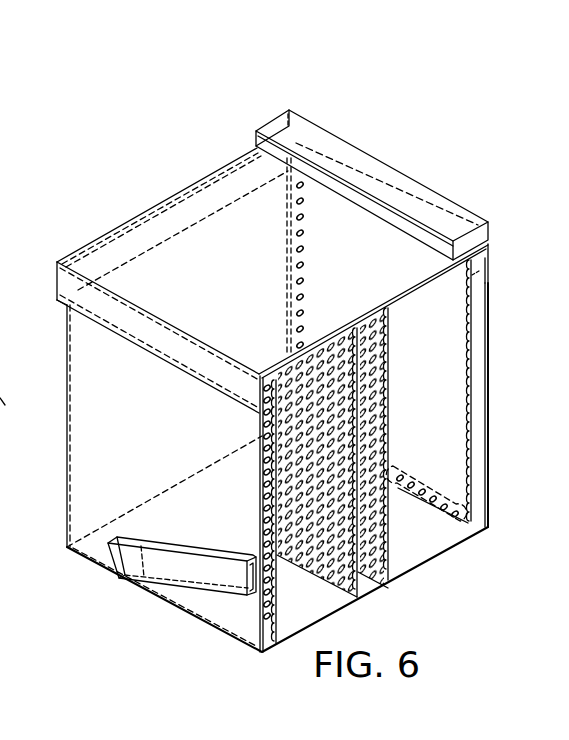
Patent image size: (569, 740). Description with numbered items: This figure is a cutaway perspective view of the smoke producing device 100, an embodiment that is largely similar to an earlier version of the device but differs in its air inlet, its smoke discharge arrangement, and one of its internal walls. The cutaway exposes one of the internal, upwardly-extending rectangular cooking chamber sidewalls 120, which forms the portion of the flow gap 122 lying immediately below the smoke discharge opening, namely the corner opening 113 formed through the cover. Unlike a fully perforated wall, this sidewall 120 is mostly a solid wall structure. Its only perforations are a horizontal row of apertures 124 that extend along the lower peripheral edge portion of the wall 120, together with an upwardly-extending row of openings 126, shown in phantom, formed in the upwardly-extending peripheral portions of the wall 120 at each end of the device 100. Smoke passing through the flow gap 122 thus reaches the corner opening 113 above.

The smoke producing device 100 is at (463, 86).
The corner opening 113 is at (296, 145).
The cooking chamber sidewall 120 is at (471, 396).
The flow gap 122 is at (284, 235).
The apertures 124 is at (433, 482).
The openings 126 is at (305, 249).